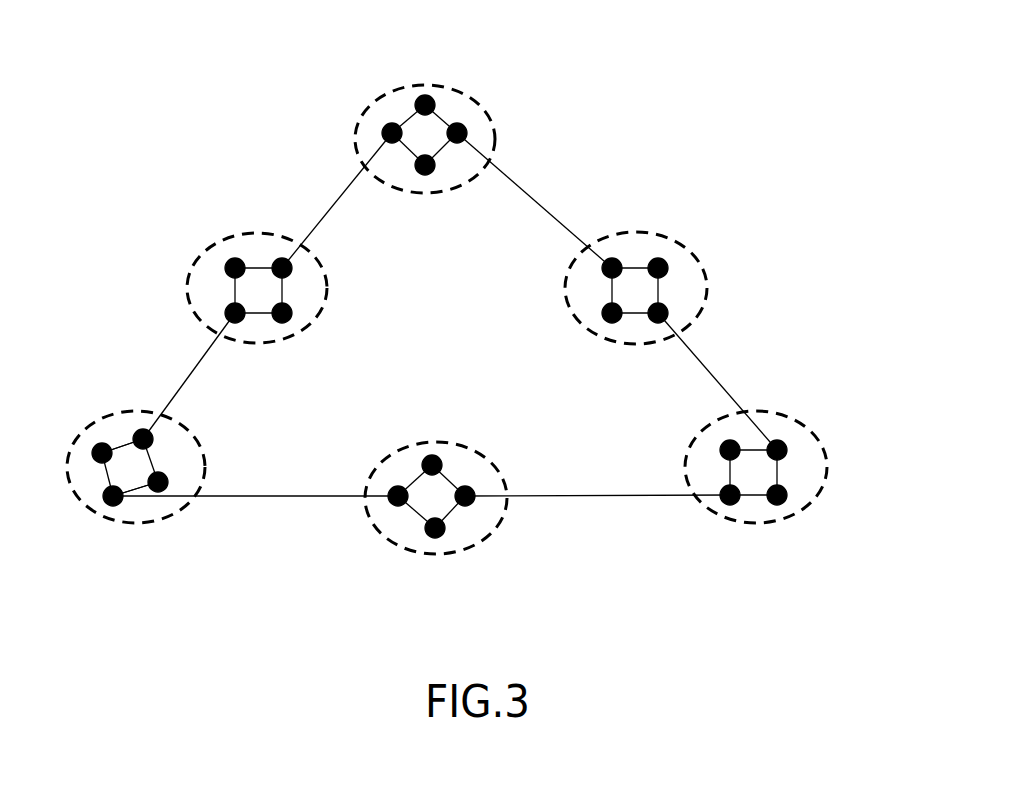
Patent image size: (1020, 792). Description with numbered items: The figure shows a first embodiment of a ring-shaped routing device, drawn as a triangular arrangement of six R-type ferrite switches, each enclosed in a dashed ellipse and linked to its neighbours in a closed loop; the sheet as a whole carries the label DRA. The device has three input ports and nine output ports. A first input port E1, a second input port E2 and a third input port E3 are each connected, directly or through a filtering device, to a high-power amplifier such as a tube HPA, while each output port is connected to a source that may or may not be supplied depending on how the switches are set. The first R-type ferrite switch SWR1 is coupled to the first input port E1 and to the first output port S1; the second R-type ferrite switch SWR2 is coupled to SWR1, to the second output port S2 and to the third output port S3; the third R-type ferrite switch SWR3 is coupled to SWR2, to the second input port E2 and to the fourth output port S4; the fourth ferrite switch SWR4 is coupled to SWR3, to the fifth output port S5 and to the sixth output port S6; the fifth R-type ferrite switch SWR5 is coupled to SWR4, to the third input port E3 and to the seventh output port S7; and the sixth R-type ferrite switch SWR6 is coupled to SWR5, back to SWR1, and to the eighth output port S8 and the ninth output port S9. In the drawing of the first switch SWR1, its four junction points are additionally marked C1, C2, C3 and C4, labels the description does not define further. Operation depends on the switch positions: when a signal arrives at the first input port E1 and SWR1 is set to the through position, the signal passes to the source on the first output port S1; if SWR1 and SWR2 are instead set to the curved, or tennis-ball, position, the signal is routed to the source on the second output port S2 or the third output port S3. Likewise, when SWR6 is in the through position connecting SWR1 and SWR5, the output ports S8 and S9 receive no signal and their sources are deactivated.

The drawing area / network DRA is at (125, 88).
The first R-type ferrite switch SWR1 is at (72, 495).
The second R-type ferrite switch SWR2 is at (185, 292).
The third R-type ferrite switch SWR3 is at (355, 120).
The fourth R-type ferrite switch SWR4 is at (705, 302).
The fifth R-type ferrite switch SWR5 is at (825, 452).
The sixth R-type ferrite switch SWR6 is at (487, 535).
The first output port S1 is at (165, 478).
The second output port S2 is at (290, 320).
The third output port S3 is at (225, 260).
The fourth output port S4 is at (426, 178).
The fifth output port S5 is at (604, 320).
The sixth output port S6 is at (665, 262).
The seventh output port S7 is at (720, 445).
The eighth output port S8 is at (432, 452).
The ninth output port S9 is at (437, 540).
The first input port E1 is at (98, 445).
The second input port E2 is at (424, 95).
The third input port E3 is at (782, 505).
The node C1 is at (95, 455).
The node C2 is at (137, 430).
The node C3 is at (170, 490).
The node C4 is at (120, 500).